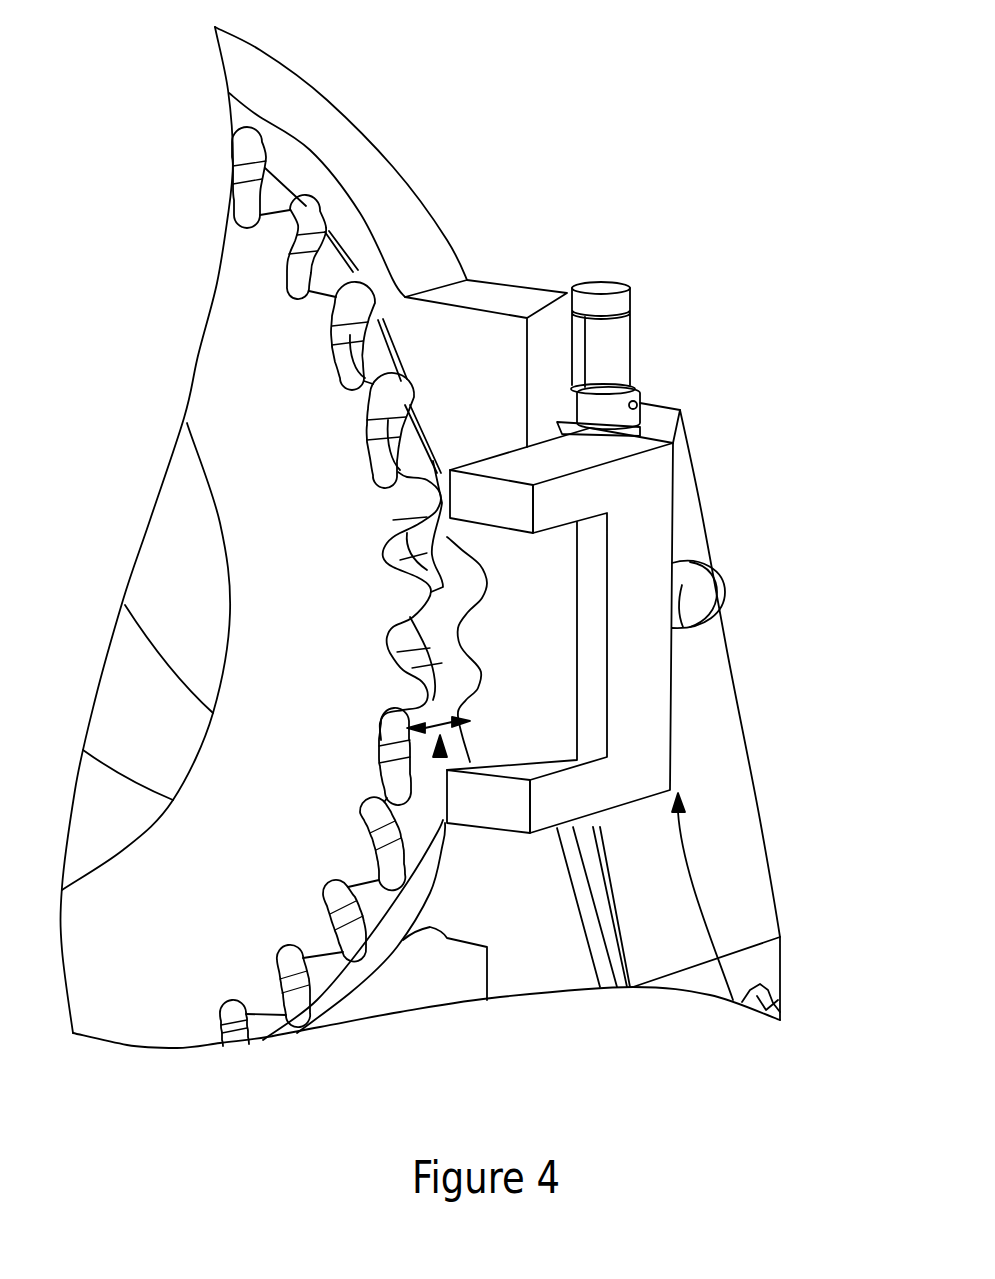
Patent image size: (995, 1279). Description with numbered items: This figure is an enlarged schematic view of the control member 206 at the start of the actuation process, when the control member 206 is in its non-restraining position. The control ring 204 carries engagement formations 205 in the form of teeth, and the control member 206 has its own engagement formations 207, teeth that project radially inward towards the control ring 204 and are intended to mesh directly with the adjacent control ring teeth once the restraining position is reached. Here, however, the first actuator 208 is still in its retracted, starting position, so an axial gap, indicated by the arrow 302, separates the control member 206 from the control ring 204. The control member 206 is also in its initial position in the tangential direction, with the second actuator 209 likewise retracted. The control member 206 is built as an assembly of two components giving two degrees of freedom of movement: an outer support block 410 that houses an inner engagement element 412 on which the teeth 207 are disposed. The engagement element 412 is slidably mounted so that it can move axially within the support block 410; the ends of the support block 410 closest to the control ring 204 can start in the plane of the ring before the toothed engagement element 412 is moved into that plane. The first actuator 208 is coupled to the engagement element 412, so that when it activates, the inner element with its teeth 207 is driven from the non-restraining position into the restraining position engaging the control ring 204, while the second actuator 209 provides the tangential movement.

The control ring 204 is at (275, 540).
The engagement formations of the control ring 205 is at (345, 298).
The control member 206 is at (780, 1020).
The engagement formations 207 is at (455, 740).
The first actuator 208 is at (717, 577).
The second actuator 209 is at (613, 338).
The arrow 302 is at (440, 757).
The support block 410 is at (637, 710).
The engagement element 412 is at (550, 617).